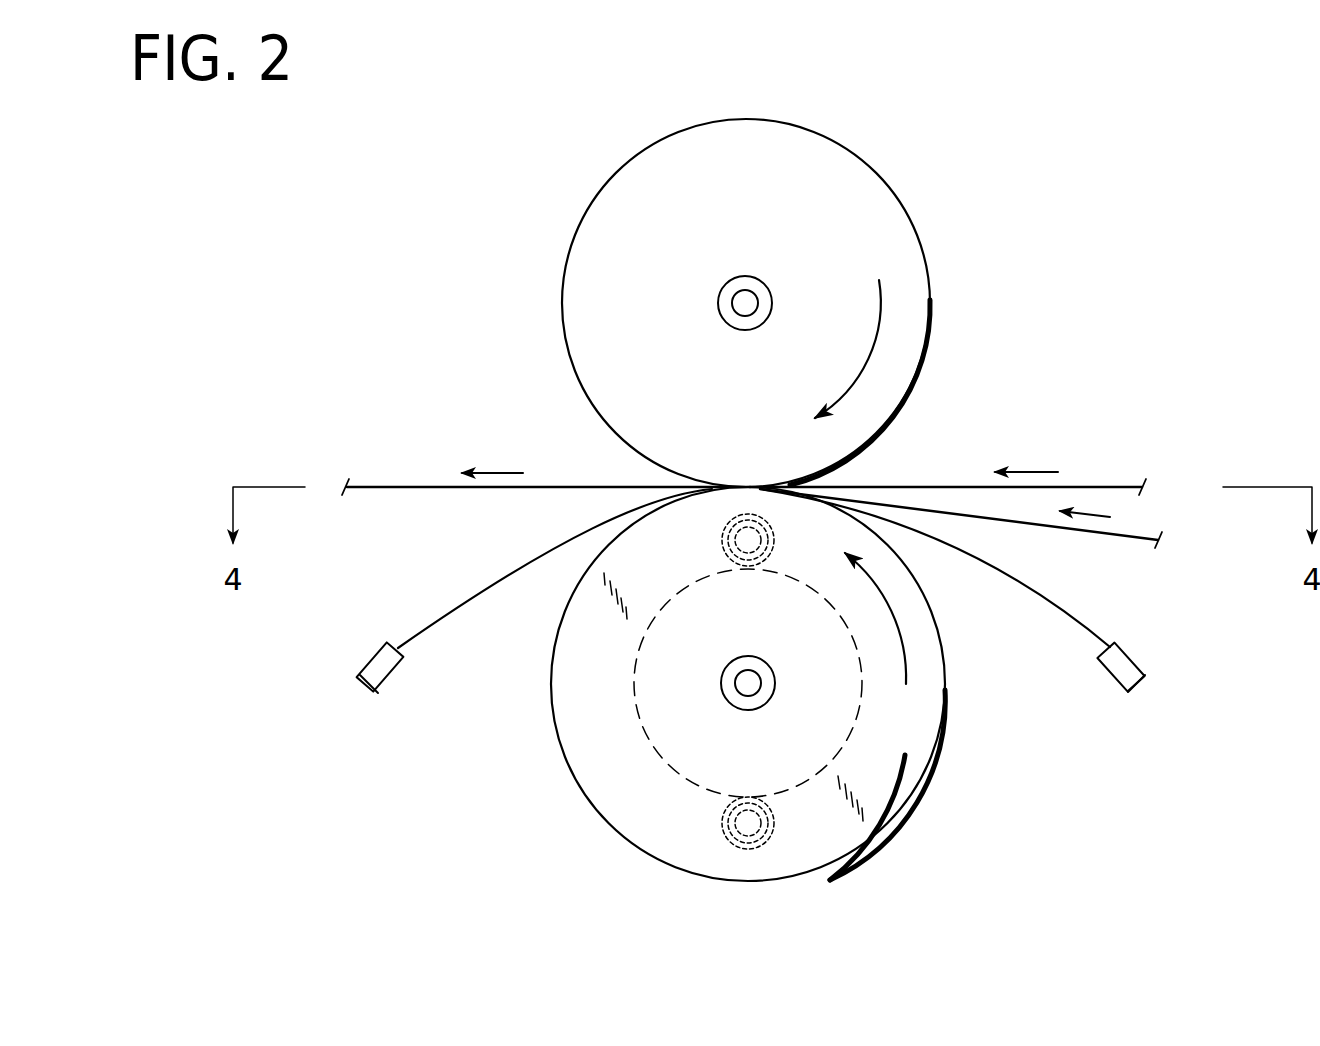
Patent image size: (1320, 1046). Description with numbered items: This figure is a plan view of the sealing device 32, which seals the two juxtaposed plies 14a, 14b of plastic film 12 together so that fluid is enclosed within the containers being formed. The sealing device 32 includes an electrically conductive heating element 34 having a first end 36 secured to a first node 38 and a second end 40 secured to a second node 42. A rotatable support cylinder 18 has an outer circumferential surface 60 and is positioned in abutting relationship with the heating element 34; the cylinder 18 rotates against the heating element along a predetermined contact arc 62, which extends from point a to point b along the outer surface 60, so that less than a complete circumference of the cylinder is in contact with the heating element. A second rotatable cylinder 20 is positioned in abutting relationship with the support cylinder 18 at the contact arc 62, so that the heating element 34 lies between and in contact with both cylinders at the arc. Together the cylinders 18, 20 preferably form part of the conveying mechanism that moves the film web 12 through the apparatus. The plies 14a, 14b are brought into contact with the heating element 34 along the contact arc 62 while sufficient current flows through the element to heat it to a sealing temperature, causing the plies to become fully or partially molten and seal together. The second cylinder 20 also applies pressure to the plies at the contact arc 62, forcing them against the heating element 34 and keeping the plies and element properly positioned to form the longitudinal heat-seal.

The plastic film 12 is at (562, 483).
The first ply 14a is at (1082, 483).
The second ply 14b is at (1093, 533).
The rotatable support cylinder 18 is at (890, 770).
The second cylinder 20 is at (842, 178).
The sealing device 32 is at (1027, 316).
The heating element 34 is at (1030, 593).
The first end 36 is at (397, 647).
The first node 38 is at (378, 678).
The second end 40 is at (1097, 643).
The second node 42 is at (1133, 680).
The outer circumferential surface 60 is at (840, 870).
The contact arc 62 is at (747, 487).
The point a is at (698, 490).
The point b is at (792, 490).